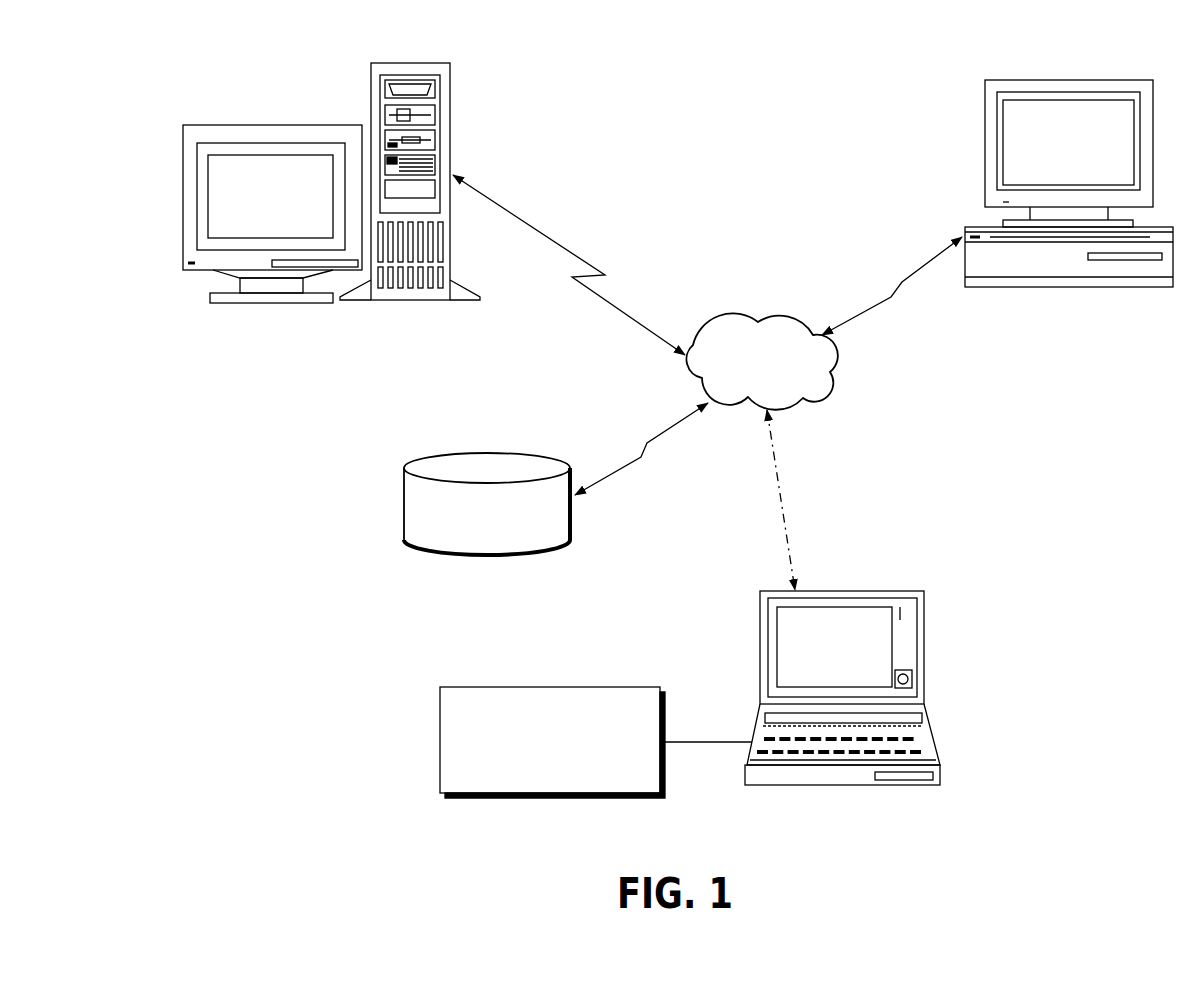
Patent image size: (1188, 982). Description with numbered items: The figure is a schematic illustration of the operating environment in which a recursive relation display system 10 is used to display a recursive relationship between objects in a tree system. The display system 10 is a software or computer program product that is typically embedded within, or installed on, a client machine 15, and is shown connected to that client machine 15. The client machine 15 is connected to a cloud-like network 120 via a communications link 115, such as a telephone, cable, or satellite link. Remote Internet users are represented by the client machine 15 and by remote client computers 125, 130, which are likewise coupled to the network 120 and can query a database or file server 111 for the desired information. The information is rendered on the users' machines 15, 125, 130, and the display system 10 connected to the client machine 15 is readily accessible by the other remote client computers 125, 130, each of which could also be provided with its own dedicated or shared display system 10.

The recursive relation display system 10 is at (467, 686).
The client machine 15 is at (895, 592).
The database or file server 111 is at (433, 455).
The communications link 115 is at (781, 502).
The network 120 is at (777, 320).
The remote client computer 125 is at (1115, 77).
The remote client computer 130 is at (450, 107).